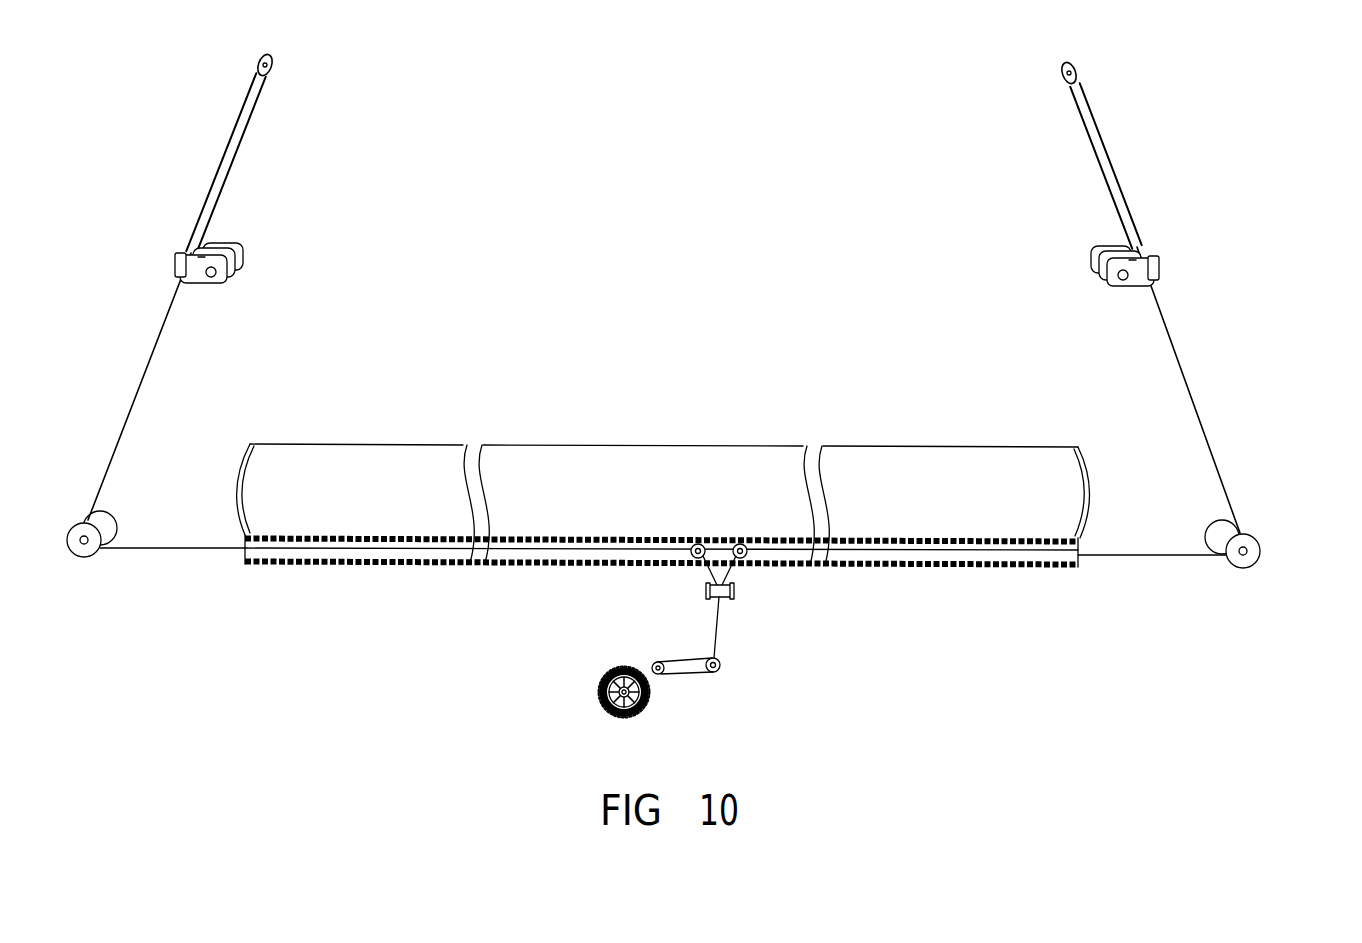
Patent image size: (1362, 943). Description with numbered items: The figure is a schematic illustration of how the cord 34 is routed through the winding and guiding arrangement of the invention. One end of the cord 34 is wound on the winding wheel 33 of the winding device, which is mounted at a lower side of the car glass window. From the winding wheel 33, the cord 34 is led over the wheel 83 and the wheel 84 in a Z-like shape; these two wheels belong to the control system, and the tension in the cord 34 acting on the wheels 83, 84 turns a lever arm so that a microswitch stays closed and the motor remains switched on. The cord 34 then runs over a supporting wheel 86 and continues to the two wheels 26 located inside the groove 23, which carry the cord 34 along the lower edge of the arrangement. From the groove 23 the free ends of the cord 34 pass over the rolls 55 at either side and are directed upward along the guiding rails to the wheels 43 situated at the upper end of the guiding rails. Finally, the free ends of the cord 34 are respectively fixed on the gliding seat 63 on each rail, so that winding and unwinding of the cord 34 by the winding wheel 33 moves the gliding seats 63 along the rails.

The groove 23 is at (505, 562).
The wheels 26 is at (694, 546).
The winding wheel 33 is at (600, 696).
The cord 34 is at (220, 166).
The wheels 43 is at (258, 70).
The rolls 55 is at (84, 544).
The gliding seat 63 is at (178, 270).
The wheel 83 is at (662, 676).
The wheel 84 is at (720, 671).
The supporting wheel 86 is at (706, 594).